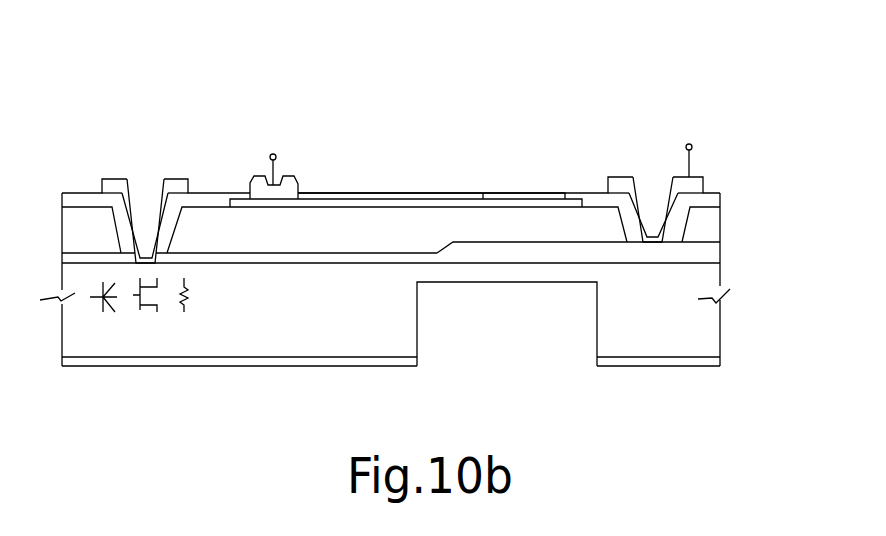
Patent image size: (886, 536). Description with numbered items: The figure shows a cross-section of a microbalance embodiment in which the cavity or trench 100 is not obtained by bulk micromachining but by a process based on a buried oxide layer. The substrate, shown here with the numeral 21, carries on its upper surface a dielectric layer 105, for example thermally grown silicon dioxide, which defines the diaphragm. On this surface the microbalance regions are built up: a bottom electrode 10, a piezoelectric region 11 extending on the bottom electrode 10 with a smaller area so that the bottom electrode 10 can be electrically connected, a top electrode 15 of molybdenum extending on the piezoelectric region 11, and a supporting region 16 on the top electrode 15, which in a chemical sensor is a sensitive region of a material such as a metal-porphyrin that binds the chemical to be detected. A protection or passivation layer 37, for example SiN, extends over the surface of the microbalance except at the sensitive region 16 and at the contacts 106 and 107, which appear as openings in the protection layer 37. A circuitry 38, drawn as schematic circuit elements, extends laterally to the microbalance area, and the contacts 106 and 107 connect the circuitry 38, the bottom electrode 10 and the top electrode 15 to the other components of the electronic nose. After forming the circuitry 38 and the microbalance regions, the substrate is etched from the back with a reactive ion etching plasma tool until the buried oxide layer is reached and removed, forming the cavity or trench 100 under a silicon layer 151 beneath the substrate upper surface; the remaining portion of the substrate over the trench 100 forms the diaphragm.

The cavity or trench 100 is at (547, 370).
The substrate 21 is at (697, 351).
The silicon layer 151 is at (502, 273).
The dielectric layer 105 is at (712, 258).
The bottom electrode 10 is at (712, 245).
The piezoelectric region 11 is at (382, 243).
The circuitry 38 is at (218, 284).
The protection or passivation layer 37 is at (213, 192).
The contact 106 is at (143, 172).
The contact 107 is at (653, 174).
The top electrode 15 is at (328, 192).
The supporting region 16 is at (522, 193).